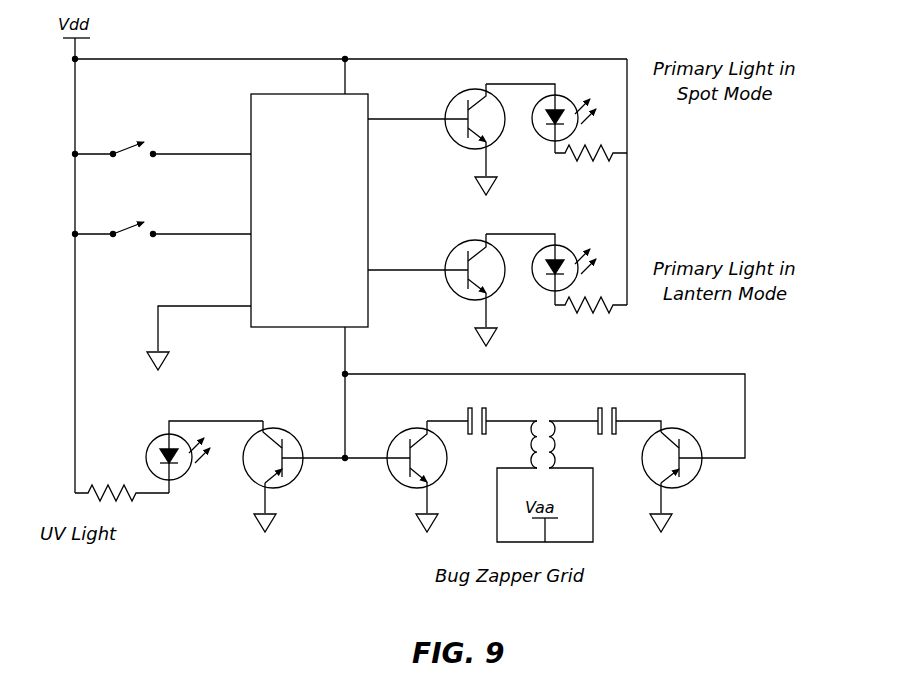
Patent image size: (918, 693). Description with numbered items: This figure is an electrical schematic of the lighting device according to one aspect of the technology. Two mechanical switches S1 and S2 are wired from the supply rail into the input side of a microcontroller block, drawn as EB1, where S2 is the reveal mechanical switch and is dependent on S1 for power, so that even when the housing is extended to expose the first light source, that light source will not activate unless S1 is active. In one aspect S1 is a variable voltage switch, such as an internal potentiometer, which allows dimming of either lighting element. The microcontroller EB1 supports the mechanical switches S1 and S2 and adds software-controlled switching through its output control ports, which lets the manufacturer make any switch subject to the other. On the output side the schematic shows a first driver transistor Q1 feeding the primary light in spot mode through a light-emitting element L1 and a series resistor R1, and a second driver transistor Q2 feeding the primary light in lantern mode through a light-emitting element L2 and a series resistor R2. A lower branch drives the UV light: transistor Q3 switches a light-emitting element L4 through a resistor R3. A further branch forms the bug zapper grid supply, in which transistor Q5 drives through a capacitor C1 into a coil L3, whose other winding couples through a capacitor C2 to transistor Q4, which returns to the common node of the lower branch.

The microcontroller EB1 is at (257, 221).
The mechanical switch S1 is at (162, 224).
The mechanical switch S2 is at (162, 144).
The transistor Q1 is at (436, 139).
The primary light LED (spot mode) L1 is at (541, 118).
The resistor R1 is at (591, 166).
The transistor Q2 is at (436, 290).
The primary light LED (lantern mode) L2 is at (541, 269).
The resistor R2 is at (591, 319).
The transistor Q3 is at (294, 476).
The UV light LED L4 is at (195, 457).
The resistor R3 is at (122, 483).
The transistor Q5 is at (396, 476).
The capacitor C1 is at (482, 411).
The transformer / inductor L3 is at (564, 435).
The capacitor C2 is at (629, 411).
The transistor Q4 is at (684, 478).